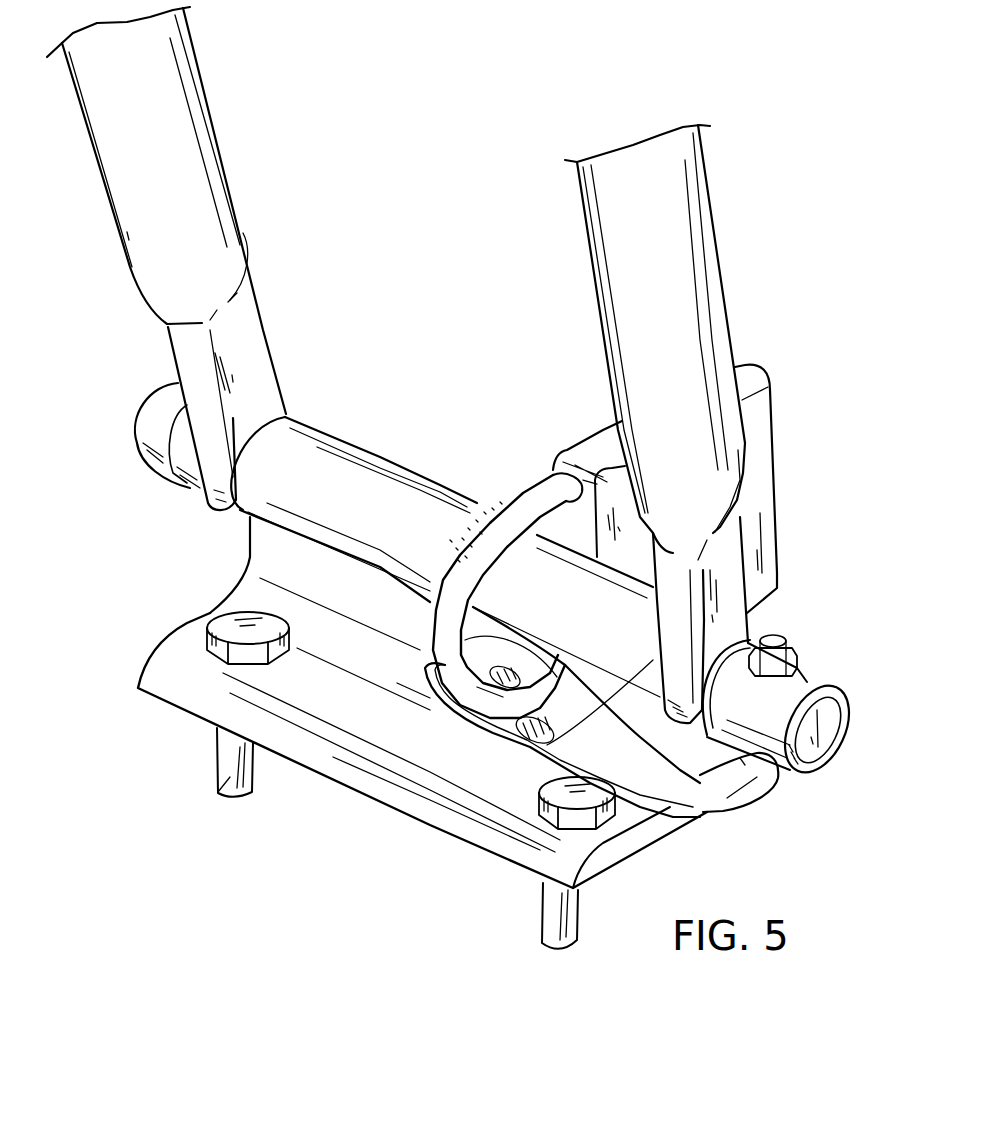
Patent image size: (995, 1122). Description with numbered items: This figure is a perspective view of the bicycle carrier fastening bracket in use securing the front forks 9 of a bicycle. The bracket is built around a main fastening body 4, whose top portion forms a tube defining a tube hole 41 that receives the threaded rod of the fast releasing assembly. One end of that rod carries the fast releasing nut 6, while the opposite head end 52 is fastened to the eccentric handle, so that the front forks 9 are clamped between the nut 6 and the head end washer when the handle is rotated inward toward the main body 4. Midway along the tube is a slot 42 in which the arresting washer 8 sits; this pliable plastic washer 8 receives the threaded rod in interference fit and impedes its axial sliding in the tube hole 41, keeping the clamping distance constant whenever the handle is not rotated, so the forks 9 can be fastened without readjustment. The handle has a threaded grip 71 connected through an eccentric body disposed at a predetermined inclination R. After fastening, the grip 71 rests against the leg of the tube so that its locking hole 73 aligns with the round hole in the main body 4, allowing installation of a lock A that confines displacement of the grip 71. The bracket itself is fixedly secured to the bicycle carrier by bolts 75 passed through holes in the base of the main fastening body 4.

The main fastening body 4 is at (380, 788).
The fast releasing nut 6 is at (183, 487).
The arresting washer 8 is at (417, 580).
The front forks 9 is at (243, 320).
The tube hole 41 is at (307, 457).
The slot 42 is at (458, 537).
The head end 52 is at (827, 713).
The grip 71 is at (547, 745).
The locking hole 73 is at (533, 720).
The bolts 75 is at (230, 780).
The lock A is at (762, 502).
The inclination R is at (750, 777).